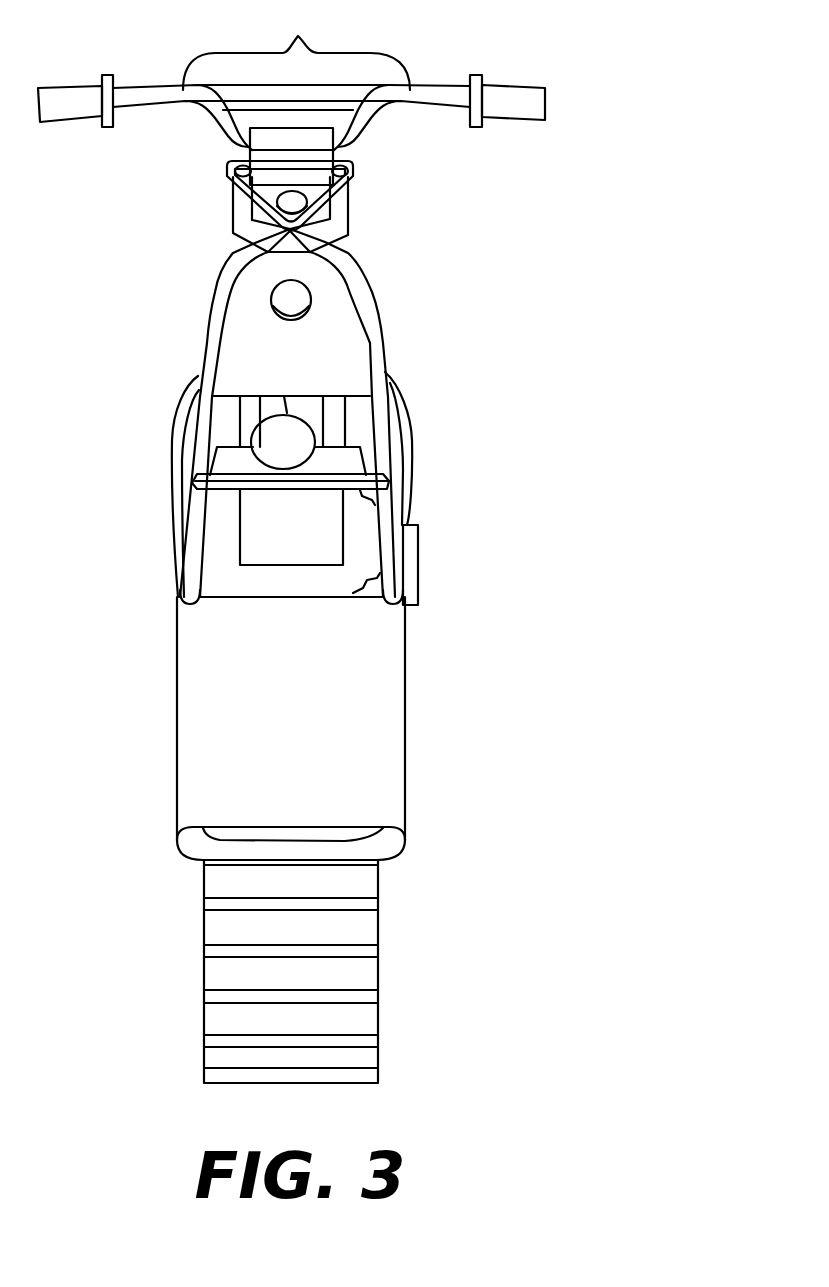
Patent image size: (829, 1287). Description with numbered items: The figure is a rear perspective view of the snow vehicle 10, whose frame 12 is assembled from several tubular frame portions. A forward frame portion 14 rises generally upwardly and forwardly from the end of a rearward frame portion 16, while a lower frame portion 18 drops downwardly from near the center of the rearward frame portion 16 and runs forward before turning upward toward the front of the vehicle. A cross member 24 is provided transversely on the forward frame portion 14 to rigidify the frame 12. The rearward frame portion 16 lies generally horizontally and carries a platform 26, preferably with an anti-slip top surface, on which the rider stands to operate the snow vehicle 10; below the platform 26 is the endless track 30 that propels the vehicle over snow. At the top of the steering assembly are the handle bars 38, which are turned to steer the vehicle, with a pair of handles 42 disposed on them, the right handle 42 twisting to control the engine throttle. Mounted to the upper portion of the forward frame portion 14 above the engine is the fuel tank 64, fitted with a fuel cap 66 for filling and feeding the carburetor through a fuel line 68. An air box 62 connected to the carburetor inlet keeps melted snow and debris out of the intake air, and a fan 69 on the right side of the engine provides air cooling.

The snow vehicle 10 is at (485, 212).
The frame 12 is at (442, 600).
The forward frame portion 14 is at (378, 300).
The rearward frame portion 16 is at (406, 748).
The lower frame portion 18 is at (404, 420).
The cross member 24 is at (377, 471).
The platform 26 is at (255, 690).
The endless track 30 is at (379, 945).
The handle bars 38 is at (318, 53).
The handles 42 is at (78, 84).
The air box 62 is at (262, 525).
The fuel tank 64 is at (245, 356).
The fuel cap 66 is at (270, 299).
The fuel line 68 is at (258, 412).
The fan 69 is at (419, 555).